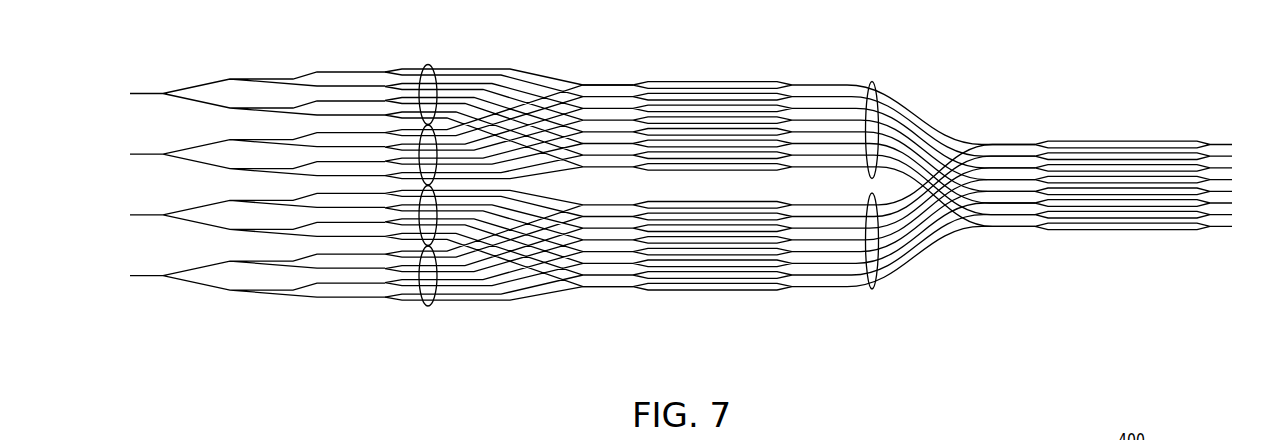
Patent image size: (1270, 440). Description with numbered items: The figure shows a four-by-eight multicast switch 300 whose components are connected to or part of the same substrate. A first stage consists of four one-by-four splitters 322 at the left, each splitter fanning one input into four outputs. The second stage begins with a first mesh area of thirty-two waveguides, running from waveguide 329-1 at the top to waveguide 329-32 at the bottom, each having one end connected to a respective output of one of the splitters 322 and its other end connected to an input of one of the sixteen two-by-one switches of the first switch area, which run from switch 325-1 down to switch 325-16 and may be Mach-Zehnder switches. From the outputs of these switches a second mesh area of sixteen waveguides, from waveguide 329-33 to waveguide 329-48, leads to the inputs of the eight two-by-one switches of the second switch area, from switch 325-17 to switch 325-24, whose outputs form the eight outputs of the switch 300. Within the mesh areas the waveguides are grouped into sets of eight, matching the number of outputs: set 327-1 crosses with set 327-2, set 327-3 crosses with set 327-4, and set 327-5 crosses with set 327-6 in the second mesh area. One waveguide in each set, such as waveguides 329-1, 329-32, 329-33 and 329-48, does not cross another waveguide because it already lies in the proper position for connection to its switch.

The multicast switch 300 is at (1130, 79).
The 1×4 splitters 322 is at (253, 321).
The 2×1 switch 325-1 is at (713, 81).
The 2×1 switch 325-16 is at (748, 292).
The 2×1 switch 325-17 is at (1178, 141).
The 2×1 switch 325-24 is at (1102, 230).
The set of waveguides 327-1 is at (428, 64).
The set of waveguides 327-2 is at (431, 124).
The set of waveguides 327-3 is at (423, 246).
The set of waveguides 327-4 is at (427, 306).
The set of waveguides 327-5 is at (870, 81).
The set of waveguides 327-6 is at (872, 289).
The waveguide 329-1 is at (535, 72).
The waveguide 329-32 is at (545, 297).
The waveguide 329-33 is at (813, 83).
The waveguide 329-48 is at (817, 288).